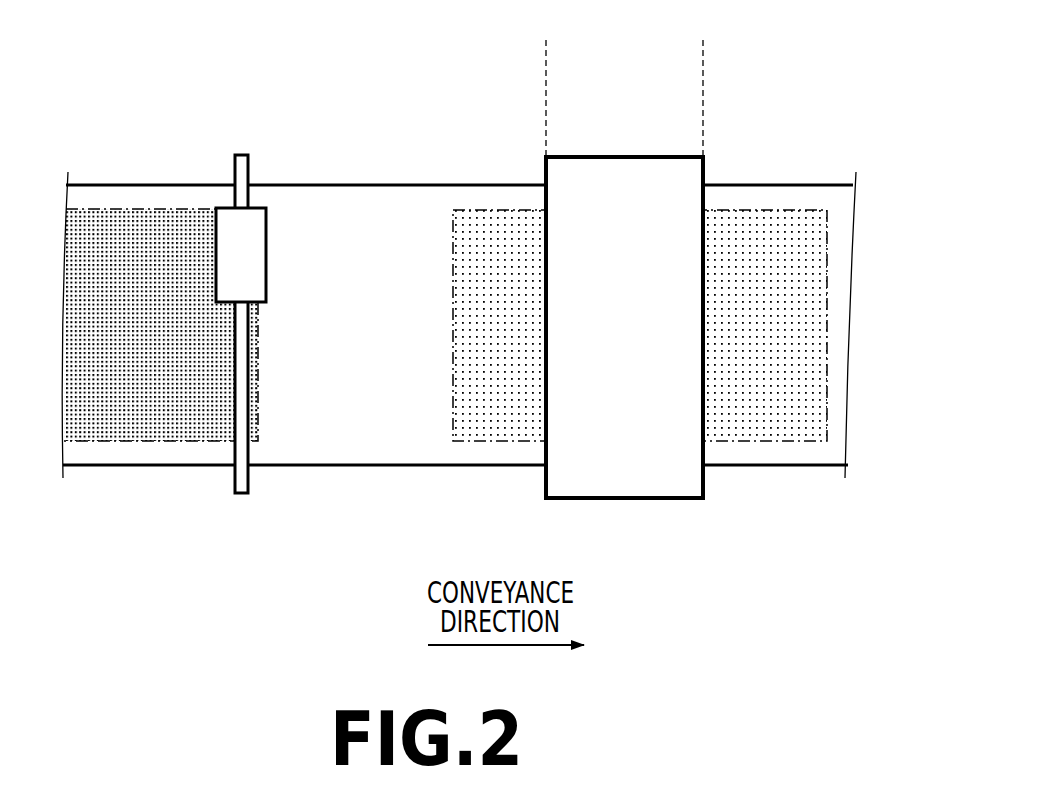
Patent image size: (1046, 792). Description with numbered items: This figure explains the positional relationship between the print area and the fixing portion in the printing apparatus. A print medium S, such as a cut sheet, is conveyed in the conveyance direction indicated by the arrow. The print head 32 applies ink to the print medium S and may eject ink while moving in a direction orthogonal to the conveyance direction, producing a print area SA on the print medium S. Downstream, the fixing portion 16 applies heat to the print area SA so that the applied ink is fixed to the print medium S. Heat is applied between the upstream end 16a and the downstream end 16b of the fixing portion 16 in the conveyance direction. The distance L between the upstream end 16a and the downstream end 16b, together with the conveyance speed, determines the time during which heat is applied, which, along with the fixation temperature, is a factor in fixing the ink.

The fixing portion 16 is at (622, 477).
The upstream end 16a is at (546, 173).
The downstream end 16b is at (705, 173).
The print head 32 is at (264, 253).
The print medium S is at (358, 452).
The print area SA is at (158, 425).
The distance L is at (702, 55).